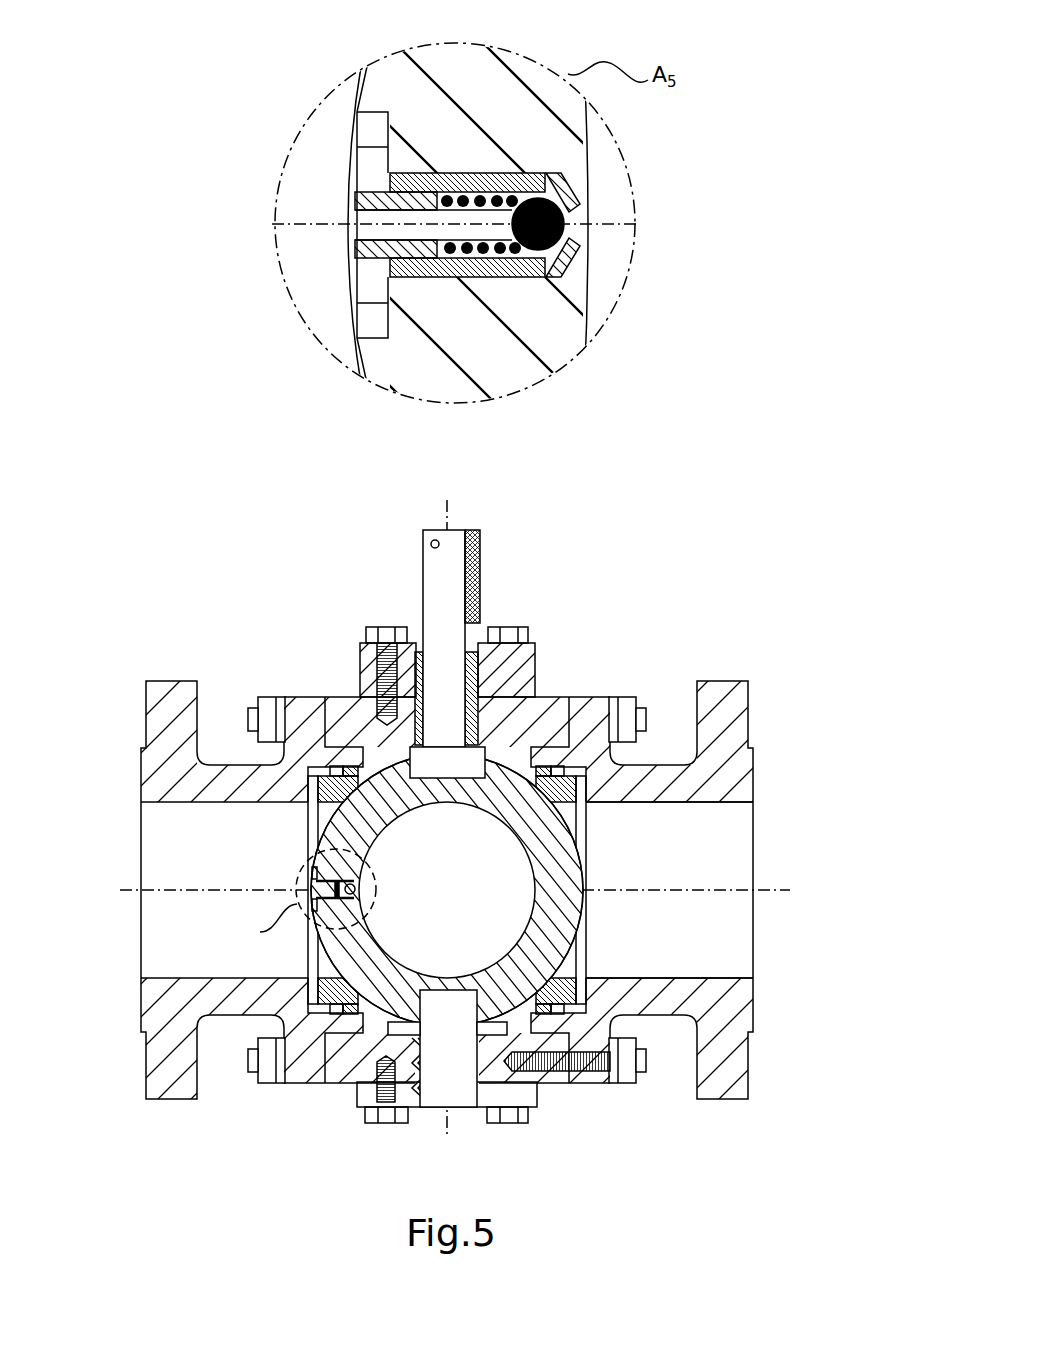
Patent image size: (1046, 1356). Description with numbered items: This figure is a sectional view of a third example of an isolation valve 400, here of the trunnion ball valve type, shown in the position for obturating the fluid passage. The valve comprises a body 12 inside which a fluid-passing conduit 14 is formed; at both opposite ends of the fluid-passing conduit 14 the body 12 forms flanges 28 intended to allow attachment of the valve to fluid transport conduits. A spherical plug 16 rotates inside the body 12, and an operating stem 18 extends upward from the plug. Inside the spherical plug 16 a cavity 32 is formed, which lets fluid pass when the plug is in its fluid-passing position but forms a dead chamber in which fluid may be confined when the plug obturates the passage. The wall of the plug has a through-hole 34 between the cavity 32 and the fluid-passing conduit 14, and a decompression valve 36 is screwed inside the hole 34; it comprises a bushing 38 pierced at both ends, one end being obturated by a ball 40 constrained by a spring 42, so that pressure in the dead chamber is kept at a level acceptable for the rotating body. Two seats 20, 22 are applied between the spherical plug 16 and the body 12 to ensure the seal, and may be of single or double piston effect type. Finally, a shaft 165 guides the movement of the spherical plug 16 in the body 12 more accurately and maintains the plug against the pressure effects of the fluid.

The isolation valve 400 is at (447, 815).
The body 12 is at (305, 707).
The fluid-passing conduit 14 is at (290, 183).
The spherical plug 16 is at (575, 872).
The stem 18 is at (428, 585).
The seat 20 is at (318, 800).
The seat 22 is at (578, 787).
The flanges 28 is at (146, 1063).
The cavity 32 is at (613, 184).
The through-hole 34 is at (571, 215).
The decompression valve 36 is at (514, 291).
The bushing 38 is at (458, 188).
The ball 40 is at (565, 231).
The spring 42 is at (458, 262).
The shaft 165 is at (460, 1013).